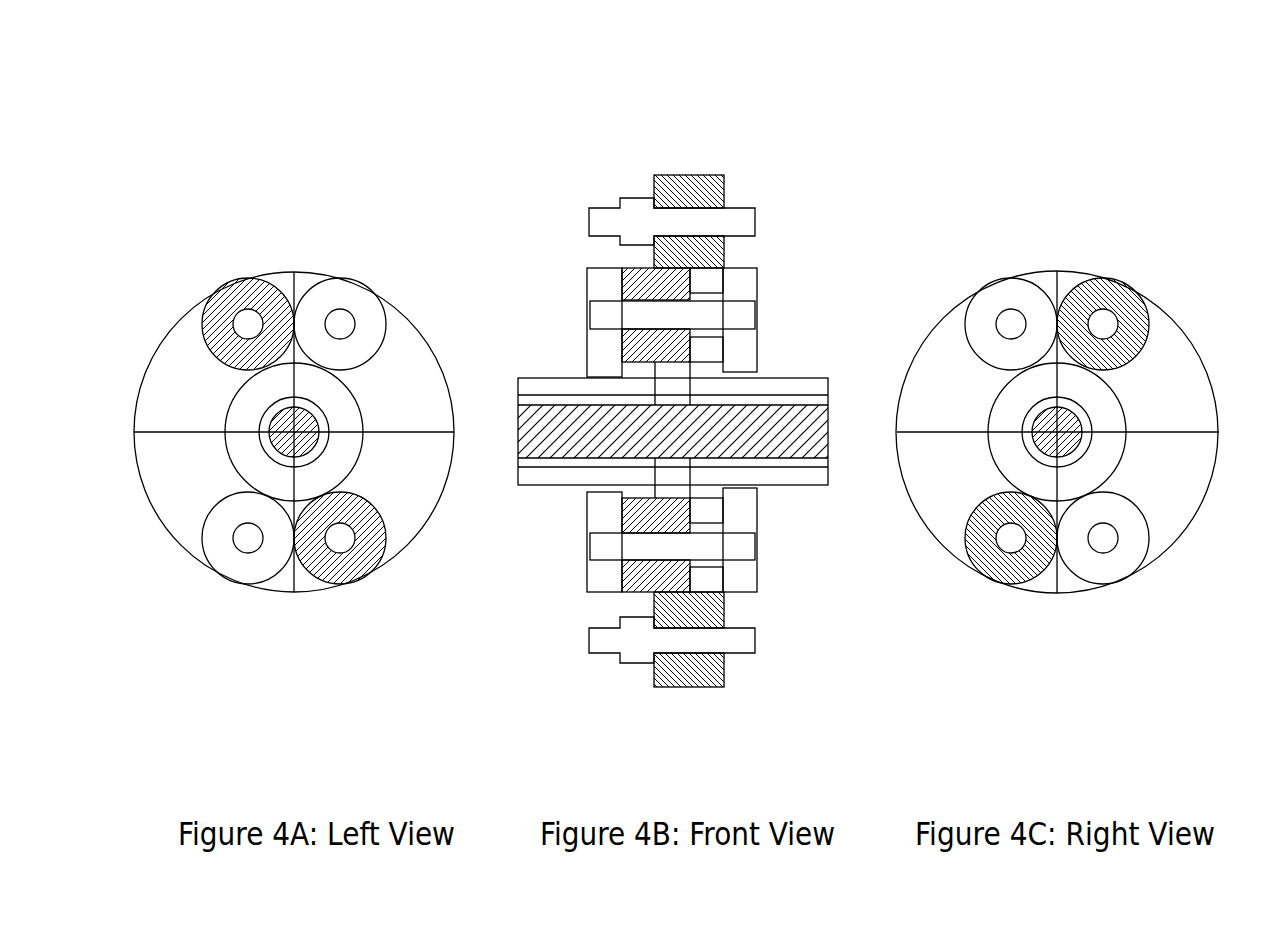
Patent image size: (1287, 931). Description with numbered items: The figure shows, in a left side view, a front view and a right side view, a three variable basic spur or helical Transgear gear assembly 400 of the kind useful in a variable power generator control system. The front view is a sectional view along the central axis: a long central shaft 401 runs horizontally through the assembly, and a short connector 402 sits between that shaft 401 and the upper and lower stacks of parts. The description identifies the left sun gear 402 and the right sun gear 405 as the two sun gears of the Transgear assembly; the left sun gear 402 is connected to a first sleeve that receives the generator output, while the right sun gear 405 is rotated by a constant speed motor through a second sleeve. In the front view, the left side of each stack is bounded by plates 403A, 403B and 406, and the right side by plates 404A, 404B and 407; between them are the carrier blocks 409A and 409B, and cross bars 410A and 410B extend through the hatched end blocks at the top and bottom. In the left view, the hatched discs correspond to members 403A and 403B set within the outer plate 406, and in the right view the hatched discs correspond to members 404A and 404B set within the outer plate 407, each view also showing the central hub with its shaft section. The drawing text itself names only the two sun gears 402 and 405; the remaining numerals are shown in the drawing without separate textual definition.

In FIG. 4A, the optical assembly 400 is at (328, 373).
In FIG. 4B, the base plate 401 is at (552, 423).
In FIG. 4B, the left sun gear 402 is at (581, 379).
In FIG. 4A, the first left lens mount 403A is at (346, 261).
In FIG. 4B, the first left lens mount 403A is at (549, 284).
In FIG. 4A, the second left lens mount 403B is at (396, 596).
In FIG. 4B, the second left lens mount 403B is at (586, 606).
In FIG. 4B, the first right lens mount 404A is at (782, 189).
In FIG. 4C, the first right lens mount 404A is at (1020, 261).
In FIG. 4B, the second right lens mount 404B is at (799, 680).
In FIG. 4C, the second right lens mount 404B is at (990, 604).
In FIG. 4B, the right sun gear 405 is at (735, 316).
In FIG. 4C, the right sun gear 405 is at (1004, 399).
In FIG. 4A, the left face plate 406 is at (328, 437).
In FIG. 4B, the left face plate 406 is at (567, 542).
In FIG. 4B, the right face plate 407 is at (790, 540).
In FIG. 4C, the right face plate 407 is at (1031, 448).
In FIG. 4B, the upper carrier block 409A is at (751, 287).
In FIG. 4B, the lower carrier block 409B is at (727, 586).
In FIG. 4B, the upper cross bar 410A is at (633, 178).
In FIG. 4B, the lower cross bar 410B is at (645, 687).